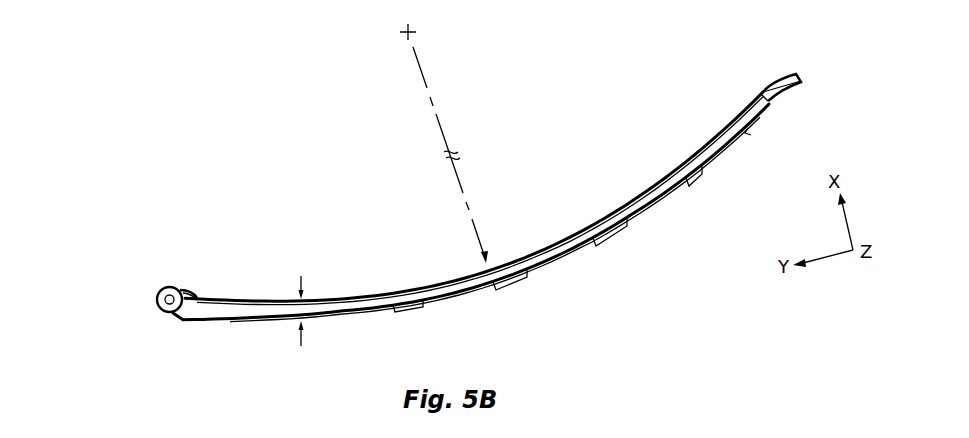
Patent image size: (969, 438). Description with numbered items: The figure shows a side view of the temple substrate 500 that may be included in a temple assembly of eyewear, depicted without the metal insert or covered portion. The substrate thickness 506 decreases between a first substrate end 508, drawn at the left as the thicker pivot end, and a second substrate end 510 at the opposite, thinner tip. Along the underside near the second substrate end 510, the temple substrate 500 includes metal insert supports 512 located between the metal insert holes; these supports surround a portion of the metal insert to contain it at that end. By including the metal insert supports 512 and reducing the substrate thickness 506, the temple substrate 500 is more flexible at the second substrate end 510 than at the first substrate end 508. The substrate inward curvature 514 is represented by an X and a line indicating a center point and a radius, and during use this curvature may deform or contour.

The temple substrate 500 is at (133, 56).
The substrate thickness 506 is at (299, 278).
The first substrate end 508 is at (158, 290).
The second substrate end 510 is at (803, 77).
The metal insert supports 512 is at (418, 312).
The substrate inward curvature 514 is at (447, 143).